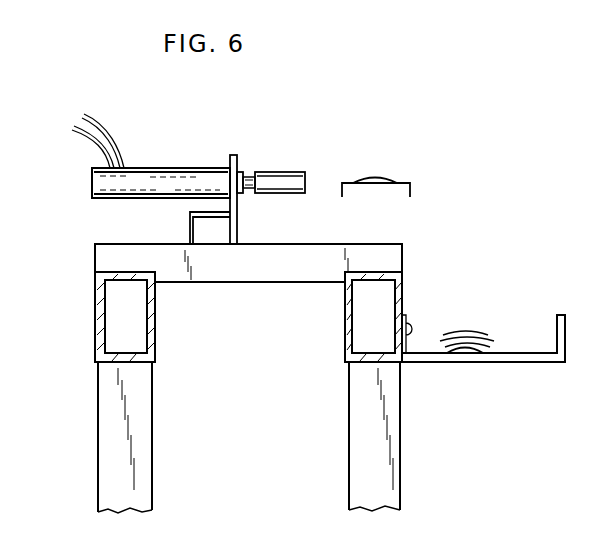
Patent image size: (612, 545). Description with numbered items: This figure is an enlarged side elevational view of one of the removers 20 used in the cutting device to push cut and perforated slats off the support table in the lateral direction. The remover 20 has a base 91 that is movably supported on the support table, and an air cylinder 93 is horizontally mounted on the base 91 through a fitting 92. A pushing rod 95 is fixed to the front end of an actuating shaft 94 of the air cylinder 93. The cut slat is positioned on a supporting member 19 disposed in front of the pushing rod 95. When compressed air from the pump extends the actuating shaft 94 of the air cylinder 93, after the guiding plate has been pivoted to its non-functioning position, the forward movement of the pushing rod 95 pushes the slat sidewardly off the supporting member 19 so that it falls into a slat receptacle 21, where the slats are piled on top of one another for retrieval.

The supporting member 19 is at (400, 181).
The remover 20 is at (275, 140).
The slat receptacle 21 is at (520, 362).
The base 91 is at (95, 257).
The fitting 92 is at (233, 156).
The air cylinder 93 is at (135, 175).
The actuating shaft 94 is at (250, 177).
The pushing rod 95 is at (298, 172).